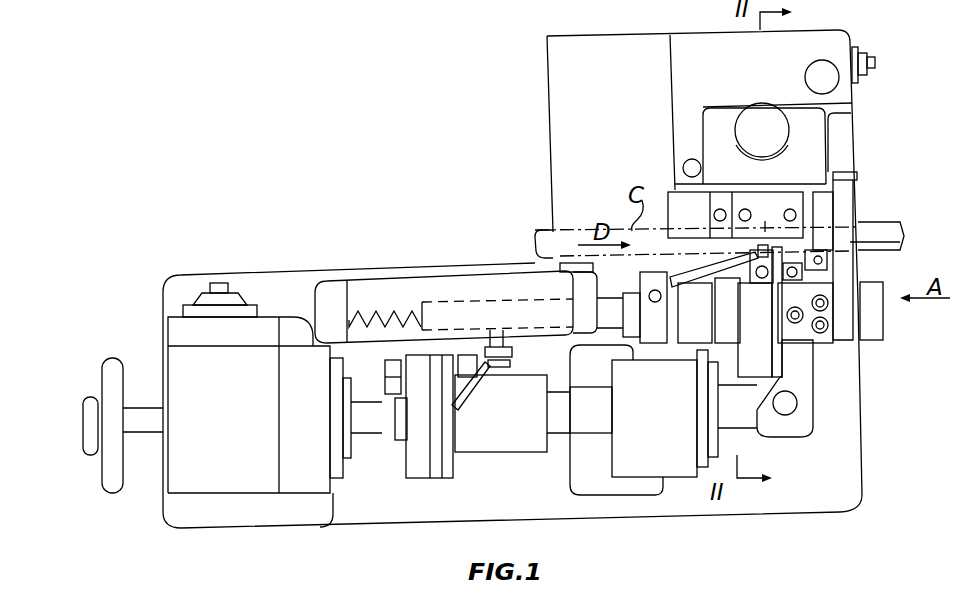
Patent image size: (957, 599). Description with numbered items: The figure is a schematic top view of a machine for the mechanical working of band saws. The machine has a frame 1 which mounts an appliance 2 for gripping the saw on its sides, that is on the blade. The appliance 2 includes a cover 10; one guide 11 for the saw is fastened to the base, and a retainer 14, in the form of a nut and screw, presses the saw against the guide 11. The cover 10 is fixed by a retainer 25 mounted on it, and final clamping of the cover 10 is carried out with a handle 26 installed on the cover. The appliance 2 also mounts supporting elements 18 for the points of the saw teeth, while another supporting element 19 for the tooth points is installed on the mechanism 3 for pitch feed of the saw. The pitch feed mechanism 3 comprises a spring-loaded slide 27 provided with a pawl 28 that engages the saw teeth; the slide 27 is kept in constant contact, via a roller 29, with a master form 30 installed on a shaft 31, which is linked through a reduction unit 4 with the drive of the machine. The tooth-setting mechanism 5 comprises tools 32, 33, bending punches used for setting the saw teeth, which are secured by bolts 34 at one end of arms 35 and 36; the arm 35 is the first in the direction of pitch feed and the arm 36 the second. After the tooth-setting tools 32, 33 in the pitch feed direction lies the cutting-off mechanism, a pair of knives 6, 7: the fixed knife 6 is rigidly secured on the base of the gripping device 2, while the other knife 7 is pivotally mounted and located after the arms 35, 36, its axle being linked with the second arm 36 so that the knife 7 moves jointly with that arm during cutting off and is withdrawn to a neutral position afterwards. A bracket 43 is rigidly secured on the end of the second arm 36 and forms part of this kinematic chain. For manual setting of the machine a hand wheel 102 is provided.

The frame 1 is at (177, 298).
The appliance for gripping the saw 2 is at (862, 121).
The mechanism for pitch feed 3 is at (497, 271).
The reduction unit 4 is at (313, 468).
The tooth-setting mechanism 5 is at (806, 447).
The fixed knife 6 is at (835, 215).
The other knife 7 is at (900, 236).
The cover 10 is at (687, 52).
The guide 11 is at (784, 197).
The retainer 14 is at (750, 135).
The supporting elements 18 is at (827, 265).
The supporting element 19 is at (578, 268).
The retainer 25 is at (832, 88).
The handle 26 is at (872, 55).
The spring-loaded slide 27 is at (594, 306).
The pawl 28 is at (697, 271).
The roller 29 is at (506, 364).
The master form 30 is at (468, 404).
The shaft 31 is at (568, 418).
The tooth-setting tool 32 is at (748, 302).
The tooth-setting tool 33 is at (795, 257).
The bolts 34 is at (802, 276).
The first arm 35 is at (750, 368).
The second arm 36 is at (798, 370).
The bracket 43 is at (813, 343).
The hand wheel 102 is at (110, 457).